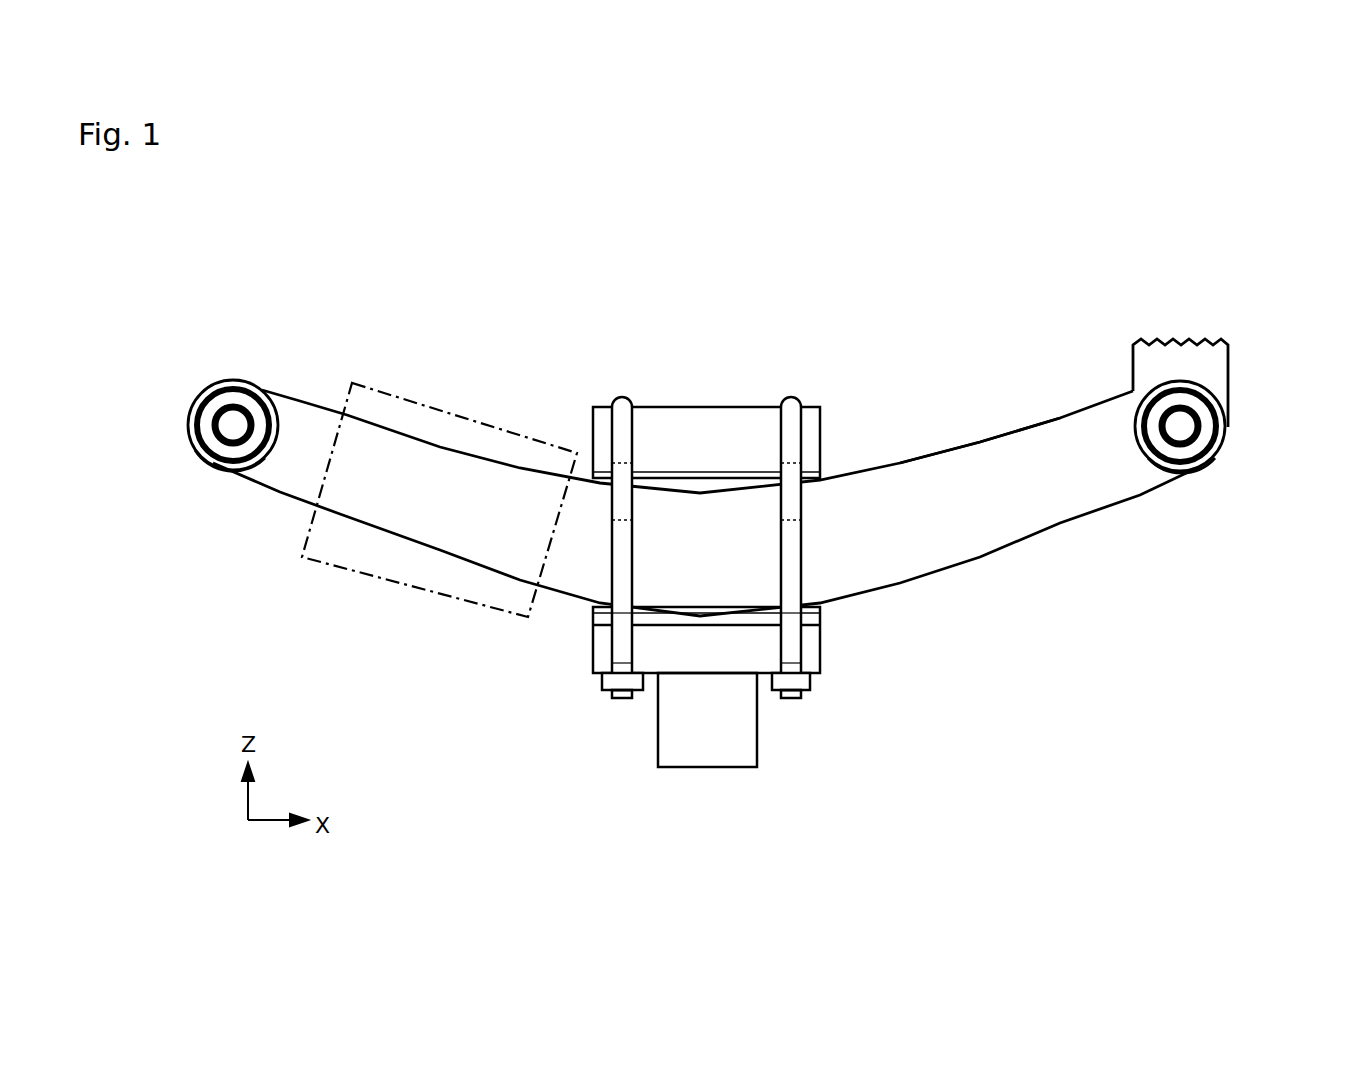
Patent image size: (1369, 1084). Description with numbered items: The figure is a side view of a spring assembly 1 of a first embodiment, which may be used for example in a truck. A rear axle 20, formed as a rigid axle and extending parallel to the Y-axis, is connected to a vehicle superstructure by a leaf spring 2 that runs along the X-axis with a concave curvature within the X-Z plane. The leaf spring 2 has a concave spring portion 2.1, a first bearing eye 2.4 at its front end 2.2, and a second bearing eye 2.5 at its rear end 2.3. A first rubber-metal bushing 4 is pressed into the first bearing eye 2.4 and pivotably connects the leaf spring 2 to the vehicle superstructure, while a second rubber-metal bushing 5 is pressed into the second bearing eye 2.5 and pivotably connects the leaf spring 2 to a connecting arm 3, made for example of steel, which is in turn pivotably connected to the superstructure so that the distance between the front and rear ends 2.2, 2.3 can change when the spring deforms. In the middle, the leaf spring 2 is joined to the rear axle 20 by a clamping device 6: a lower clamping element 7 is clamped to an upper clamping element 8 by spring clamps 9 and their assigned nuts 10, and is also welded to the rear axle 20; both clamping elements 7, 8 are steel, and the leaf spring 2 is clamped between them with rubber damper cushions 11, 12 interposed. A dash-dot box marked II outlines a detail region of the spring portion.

The spring assembly 1 is at (748, 251).
The leaf spring 2 is at (998, 523).
The spring portion 2.1 is at (934, 399).
The front end 2.2 is at (218, 394).
The rear end 2.3 is at (1172, 404).
The first bearing eye 2.4 is at (208, 482).
The second bearing eye 2.5 is at (1193, 485).
The connecting arm 3 is at (1155, 368).
The first rubber-metal bushing 4 is at (262, 392).
The second rubber-metal bushing 5 is at (1140, 425).
The clamping device 6 is at (703, 613).
The lower clamping element 7 is at (698, 646).
The upper clamping element 8 is at (748, 411).
The spring clamps 9 is at (618, 399).
The nuts 10 is at (618, 680).
The damper cushion 11 is at (640, 618).
The damper cushion 12 is at (738, 482).
The rear axle 20 is at (670, 745).
The detail region II is at (440, 405).